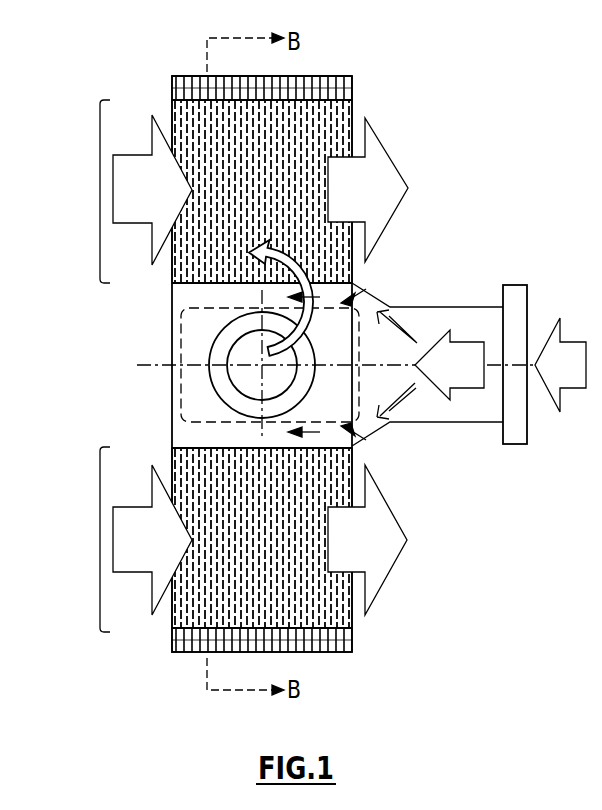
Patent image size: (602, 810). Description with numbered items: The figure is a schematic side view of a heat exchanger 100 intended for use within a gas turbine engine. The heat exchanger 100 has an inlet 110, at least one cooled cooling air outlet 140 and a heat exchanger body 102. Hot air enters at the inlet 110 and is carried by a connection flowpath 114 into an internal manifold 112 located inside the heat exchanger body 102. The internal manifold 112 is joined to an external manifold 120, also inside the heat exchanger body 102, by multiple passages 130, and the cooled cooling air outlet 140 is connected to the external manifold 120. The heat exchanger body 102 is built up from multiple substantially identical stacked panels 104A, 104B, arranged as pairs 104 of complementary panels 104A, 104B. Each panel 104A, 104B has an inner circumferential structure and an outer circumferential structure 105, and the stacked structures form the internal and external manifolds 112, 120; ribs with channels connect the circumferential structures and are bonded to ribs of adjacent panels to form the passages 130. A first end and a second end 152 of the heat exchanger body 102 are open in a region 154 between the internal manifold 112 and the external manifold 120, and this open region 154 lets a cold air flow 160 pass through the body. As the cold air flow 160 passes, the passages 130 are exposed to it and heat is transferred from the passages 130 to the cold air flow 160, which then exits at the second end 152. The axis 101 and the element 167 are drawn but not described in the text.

The heat exchanger 100 is at (468, 115).
The axis 101 is at (143, 362).
The heat exchanger body 102 is at (315, 652).
The pair of stacked panels 104 is at (348, 655).
The stacked panel 104A is at (350, 613).
The stacked panel 104B is at (343, 600).
The outer circumferential structure 105 is at (353, 637).
The inlet 110 is at (528, 332).
The internal manifold 112 is at (353, 286).
The connection flowpath 114 is at (448, 317).
The external manifold 120 is at (330, 92).
The passages 130 is at (173, 92).
The cooled cooling air outlet 140 is at (223, 392).
The second end 152 is at (353, 127).
The open region 154 is at (100, 183).
The cold air flow 160 is at (132, 168).
The lower inlet wall 167 is at (365, 441).